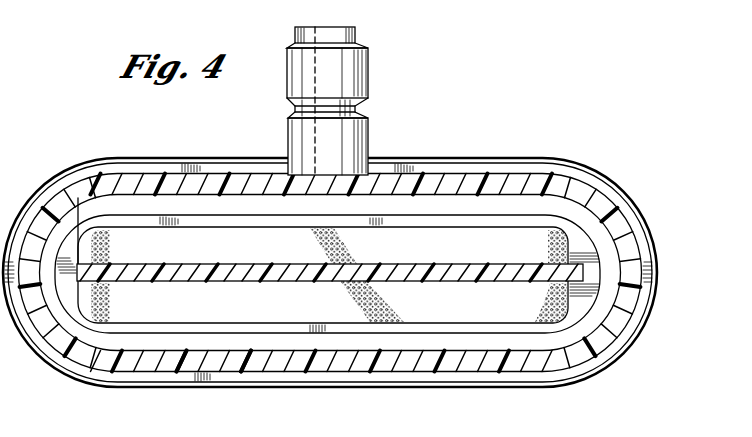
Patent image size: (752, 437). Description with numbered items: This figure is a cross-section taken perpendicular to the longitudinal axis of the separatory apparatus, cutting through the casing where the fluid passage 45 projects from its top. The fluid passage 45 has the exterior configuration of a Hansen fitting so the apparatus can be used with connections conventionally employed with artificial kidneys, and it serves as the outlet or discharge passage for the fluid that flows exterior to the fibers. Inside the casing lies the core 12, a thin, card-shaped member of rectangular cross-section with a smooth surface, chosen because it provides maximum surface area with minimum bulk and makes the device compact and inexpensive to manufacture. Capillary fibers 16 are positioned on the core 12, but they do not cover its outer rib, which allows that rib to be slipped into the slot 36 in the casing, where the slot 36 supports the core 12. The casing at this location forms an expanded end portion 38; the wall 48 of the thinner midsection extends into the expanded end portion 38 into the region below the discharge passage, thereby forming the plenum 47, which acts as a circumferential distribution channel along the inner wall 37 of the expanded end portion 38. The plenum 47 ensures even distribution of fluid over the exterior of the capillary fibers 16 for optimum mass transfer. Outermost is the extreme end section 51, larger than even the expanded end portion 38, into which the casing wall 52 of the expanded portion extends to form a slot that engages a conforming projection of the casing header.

The core 12 is at (89, 383).
The capillary fibers 16 is at (110, 237).
The slot 36 is at (80, 198).
The inner wall 37 is at (173, 197).
The expanded casing end portion 38 is at (147, 174).
The fluid passage 45 is at (369, 76).
The plenum 47 is at (489, 197).
The wall of the thinner midsection 48 is at (577, 250).
The extreme end section 51 is at (433, 157).
The casing wall 52 is at (186, 366).